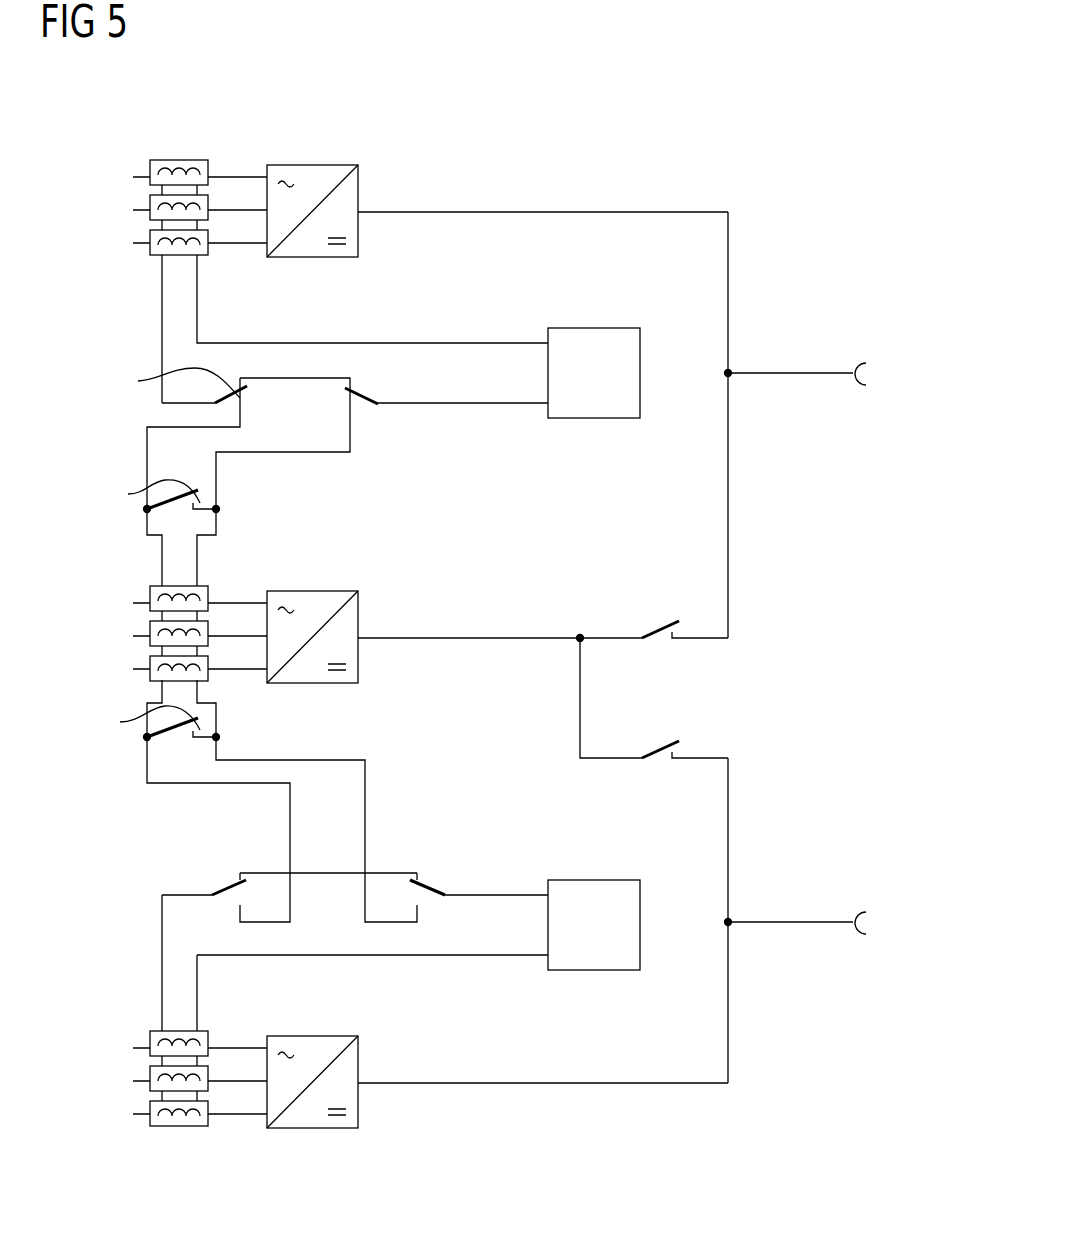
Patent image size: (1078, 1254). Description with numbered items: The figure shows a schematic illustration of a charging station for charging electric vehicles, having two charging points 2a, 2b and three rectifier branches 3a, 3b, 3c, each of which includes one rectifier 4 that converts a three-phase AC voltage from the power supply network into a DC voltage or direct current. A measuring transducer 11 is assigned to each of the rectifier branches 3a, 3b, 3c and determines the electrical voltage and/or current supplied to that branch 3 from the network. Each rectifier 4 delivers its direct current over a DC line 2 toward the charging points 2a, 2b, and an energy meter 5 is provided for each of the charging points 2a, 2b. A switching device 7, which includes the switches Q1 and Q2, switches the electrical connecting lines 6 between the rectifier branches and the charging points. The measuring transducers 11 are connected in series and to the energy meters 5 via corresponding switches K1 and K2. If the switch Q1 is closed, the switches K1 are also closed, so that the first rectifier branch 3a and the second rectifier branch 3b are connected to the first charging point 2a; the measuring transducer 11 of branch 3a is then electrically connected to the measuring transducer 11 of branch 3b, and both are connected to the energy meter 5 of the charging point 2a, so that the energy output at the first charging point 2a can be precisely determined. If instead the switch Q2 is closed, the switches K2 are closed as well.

The charging point 2 is at (540, 219).
The first charging point 2a is at (870, 372).
The second charging point 2b is at (870, 920).
The rectifier branch 3 is at (168, 292).
The first rectifier branch 3a is at (342, 148).
The second rectifier branch 3b is at (342, 578).
The third rectifier branch 3c is at (318, 1149).
The rectifier 4 is at (308, 164).
The energy meter 5 is at (596, 328).
The electrical connecting line 6 is at (618, 212).
The switching device 7 is at (653, 615).
The measuring transducer 11 is at (176, 146).
The switch K1 is at (380, 442).
The switch K2 is at (434, 884).
The switch Q1 is at (660, 645).
The switch Q2 is at (660, 765).